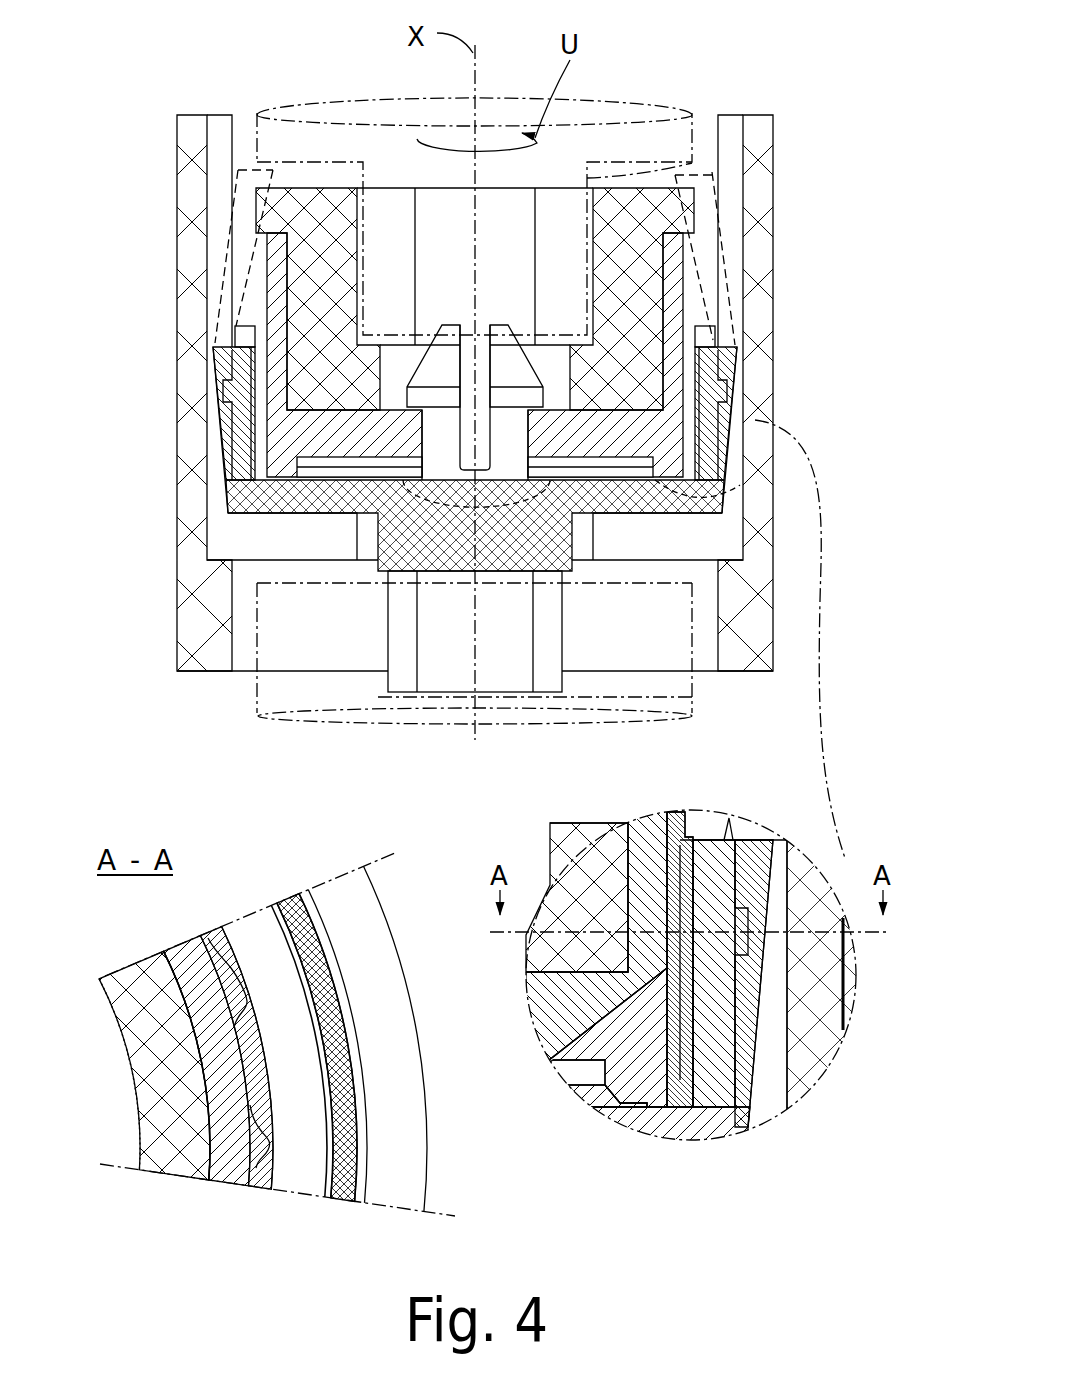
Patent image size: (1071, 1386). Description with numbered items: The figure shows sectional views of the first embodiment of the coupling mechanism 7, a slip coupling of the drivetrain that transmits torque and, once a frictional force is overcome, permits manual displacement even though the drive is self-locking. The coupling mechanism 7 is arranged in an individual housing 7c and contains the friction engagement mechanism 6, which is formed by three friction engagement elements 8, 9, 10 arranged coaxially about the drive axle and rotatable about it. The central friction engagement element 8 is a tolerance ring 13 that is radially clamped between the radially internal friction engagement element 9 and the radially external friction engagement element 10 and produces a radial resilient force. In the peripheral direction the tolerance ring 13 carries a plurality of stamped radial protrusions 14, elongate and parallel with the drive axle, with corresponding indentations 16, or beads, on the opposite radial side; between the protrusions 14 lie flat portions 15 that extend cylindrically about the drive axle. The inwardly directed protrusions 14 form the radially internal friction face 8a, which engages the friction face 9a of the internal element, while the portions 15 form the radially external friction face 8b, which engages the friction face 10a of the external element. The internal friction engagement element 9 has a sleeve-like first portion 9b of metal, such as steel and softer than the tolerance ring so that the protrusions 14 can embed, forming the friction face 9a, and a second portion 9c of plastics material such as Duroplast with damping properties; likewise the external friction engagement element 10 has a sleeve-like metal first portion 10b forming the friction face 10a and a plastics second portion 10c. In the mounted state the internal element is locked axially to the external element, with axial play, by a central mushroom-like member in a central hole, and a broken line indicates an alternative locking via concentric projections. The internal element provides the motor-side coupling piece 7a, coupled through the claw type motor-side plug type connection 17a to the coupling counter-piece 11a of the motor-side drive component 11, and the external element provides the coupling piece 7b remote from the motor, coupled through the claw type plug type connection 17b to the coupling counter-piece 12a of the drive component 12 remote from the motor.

The friction engagement mechanism 6 is at (762, 388).
The coupling mechanism 7 is at (780, 62).
The motor-side coupling piece 7a is at (386, 196).
The coupling piece remote from the motor 7b is at (443, 672).
The housing 7c is at (183, 120).
The central friction engagement element 8 is at (265, 1190).
The radially internal friction face 8a is at (655, 350).
The radially external friction face 8b is at (229, 490).
The radially internal friction engagement element 9 is at (277, 273).
The friction face 9a is at (690, 428).
The first portion 9b is at (228, 1163).
The second portion 9c is at (152, 1155).
The radially external friction engagement element 10 is at (222, 450).
The friction face 10a is at (226, 378).
The first portion 10b is at (243, 933).
The second portion 10c is at (287, 893).
The motor-side drive component 11 is at (673, 177).
The coupling counter-piece 11a is at (693, 163).
The drive component remote from the motor 12 is at (257, 700).
The coupling counter-piece 12a is at (380, 618).
The tolerance ring 13 is at (528, 1055).
The radial protrusions 14 is at (690, 410).
The flat portions 15 is at (235, 350).
The indentations 16 is at (410, 945).
The motor-side plug type connection 17a is at (337, 167).
The plug type connection remote from the motor 17b is at (347, 697).